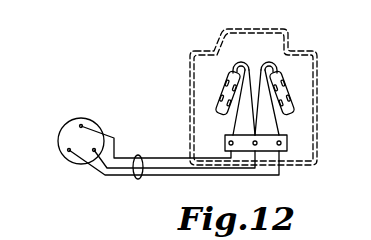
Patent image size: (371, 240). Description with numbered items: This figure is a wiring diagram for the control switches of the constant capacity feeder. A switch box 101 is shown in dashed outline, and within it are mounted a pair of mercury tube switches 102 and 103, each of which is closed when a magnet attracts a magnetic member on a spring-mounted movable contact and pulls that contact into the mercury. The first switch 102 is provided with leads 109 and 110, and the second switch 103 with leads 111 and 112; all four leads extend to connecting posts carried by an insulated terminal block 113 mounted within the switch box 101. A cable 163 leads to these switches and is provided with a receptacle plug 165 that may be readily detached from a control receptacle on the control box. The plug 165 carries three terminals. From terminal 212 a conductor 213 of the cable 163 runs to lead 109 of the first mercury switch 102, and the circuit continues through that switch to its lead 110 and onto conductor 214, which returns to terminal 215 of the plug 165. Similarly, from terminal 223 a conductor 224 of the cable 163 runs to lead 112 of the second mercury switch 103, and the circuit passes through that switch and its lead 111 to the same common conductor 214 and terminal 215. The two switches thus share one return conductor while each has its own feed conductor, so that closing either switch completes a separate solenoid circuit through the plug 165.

The switch box 101 is at (288, 37).
The mercury tube switch 102 is at (215, 80).
The mercury tube switch 103 is at (297, 80).
The lead 109 is at (236, 128).
The lead 110 is at (229, 85).
The lead 111 is at (282, 85).
The lead 112 is at (276, 126).
The insulated terminal block 113 is at (288, 142).
The cable 163 is at (137, 180).
The receptacle plug 165 is at (87, 123).
The terminal 212 is at (81, 124).
The conductor 213 is at (175, 157).
The conductor 214 is at (168, 169).
The terminal 215 is at (94, 150).
The terminal 223 is at (69, 151).
The conductor 224 is at (266, 173).